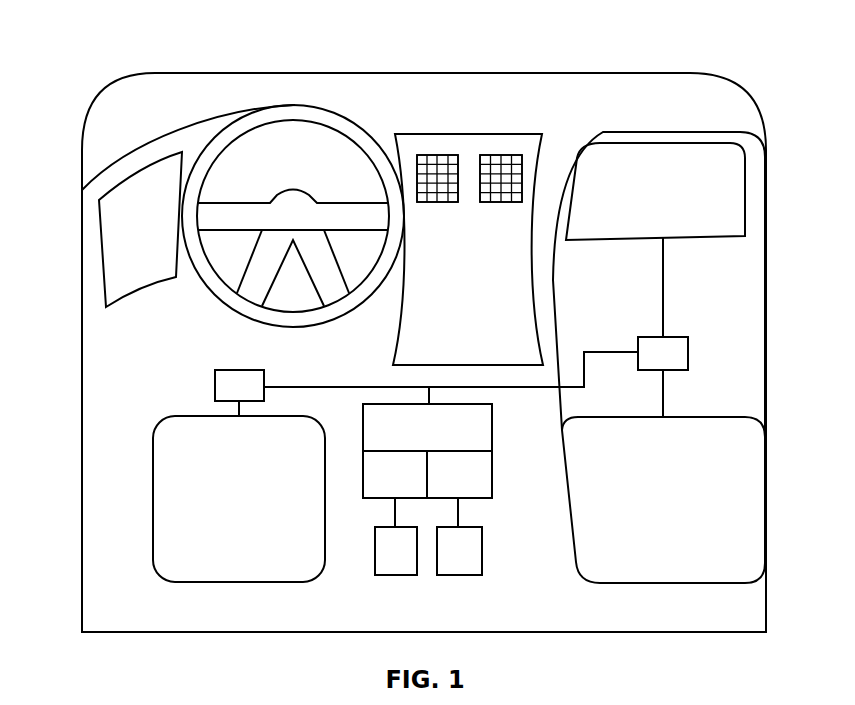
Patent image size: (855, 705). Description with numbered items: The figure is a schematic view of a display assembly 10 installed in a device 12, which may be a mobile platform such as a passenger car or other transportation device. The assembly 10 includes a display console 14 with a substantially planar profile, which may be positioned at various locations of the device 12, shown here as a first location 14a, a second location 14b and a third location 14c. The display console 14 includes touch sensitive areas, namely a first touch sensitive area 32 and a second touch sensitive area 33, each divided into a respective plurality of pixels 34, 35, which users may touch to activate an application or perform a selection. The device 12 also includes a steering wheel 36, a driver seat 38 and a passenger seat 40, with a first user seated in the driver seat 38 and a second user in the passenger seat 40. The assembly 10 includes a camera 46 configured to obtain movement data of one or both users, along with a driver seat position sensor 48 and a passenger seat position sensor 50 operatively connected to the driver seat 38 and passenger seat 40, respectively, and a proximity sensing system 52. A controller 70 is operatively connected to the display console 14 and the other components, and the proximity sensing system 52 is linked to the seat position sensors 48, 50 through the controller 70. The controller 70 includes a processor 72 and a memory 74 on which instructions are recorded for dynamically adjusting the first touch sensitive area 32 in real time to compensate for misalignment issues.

The display assembly 10 is at (170, 336).
The device 12 is at (203, 45).
The display console 14 is at (447, 134).
The first location 14a is at (398, 362).
The second location 14b is at (105, 192).
The third location 14c is at (700, 143).
The first touch sensitive area 32 is at (445, 206).
The second touch sensitive area 33 is at (503, 206).
The pixels 34 is at (440, 170).
The pixels 35 is at (505, 170).
The steering wheel 36 is at (328, 108).
The driver seat 38 is at (239, 499).
The passenger seat 40 is at (663, 500).
The camera 46 is at (466, 575).
The driver seat position sensor 48 is at (215, 385).
The passenger seat position sensor 50 is at (680, 337).
The proximity sensing system 52 is at (385, 575).
The controller 70 is at (492, 487).
The processor 72 is at (395, 474).
The memory 74 is at (459, 474).